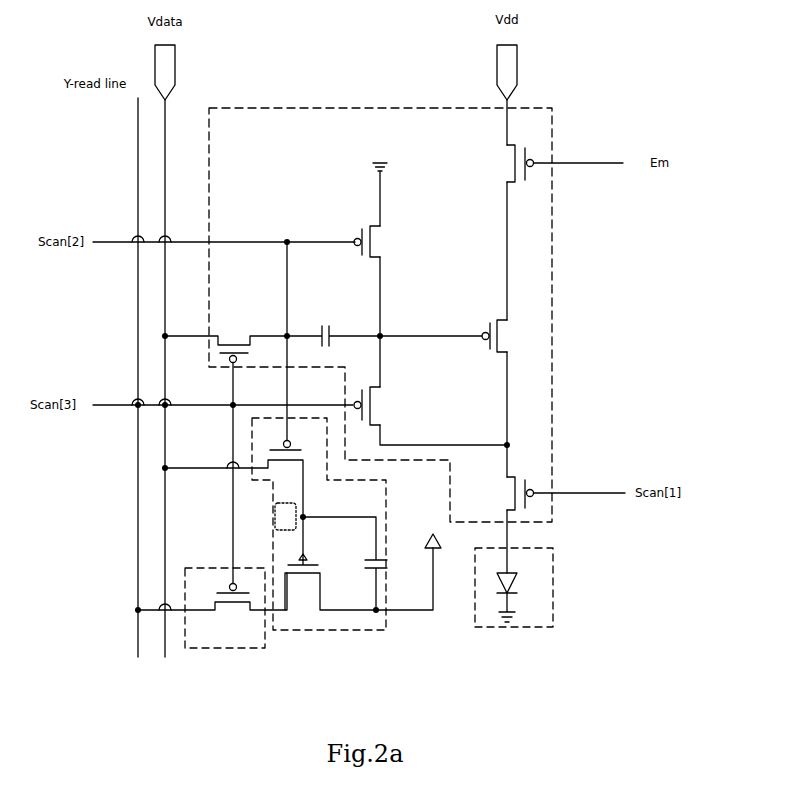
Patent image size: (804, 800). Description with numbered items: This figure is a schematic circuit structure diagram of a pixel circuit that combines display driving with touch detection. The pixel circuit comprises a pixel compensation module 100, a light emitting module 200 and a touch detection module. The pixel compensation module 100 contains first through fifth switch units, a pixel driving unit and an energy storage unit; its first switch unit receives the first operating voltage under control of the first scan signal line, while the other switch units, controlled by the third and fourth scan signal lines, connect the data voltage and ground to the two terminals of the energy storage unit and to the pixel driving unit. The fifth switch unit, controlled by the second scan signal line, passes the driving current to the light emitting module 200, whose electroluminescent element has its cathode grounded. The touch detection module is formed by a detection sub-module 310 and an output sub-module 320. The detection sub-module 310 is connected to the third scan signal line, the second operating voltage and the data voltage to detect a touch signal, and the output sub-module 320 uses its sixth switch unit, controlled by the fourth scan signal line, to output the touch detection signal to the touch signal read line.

The pixel compensation module 100 is at (553, 108).
The light emitting module 200 is at (542, 549).
The detection sub-module 310 is at (358, 630).
The output sub-module 320 is at (200, 560).